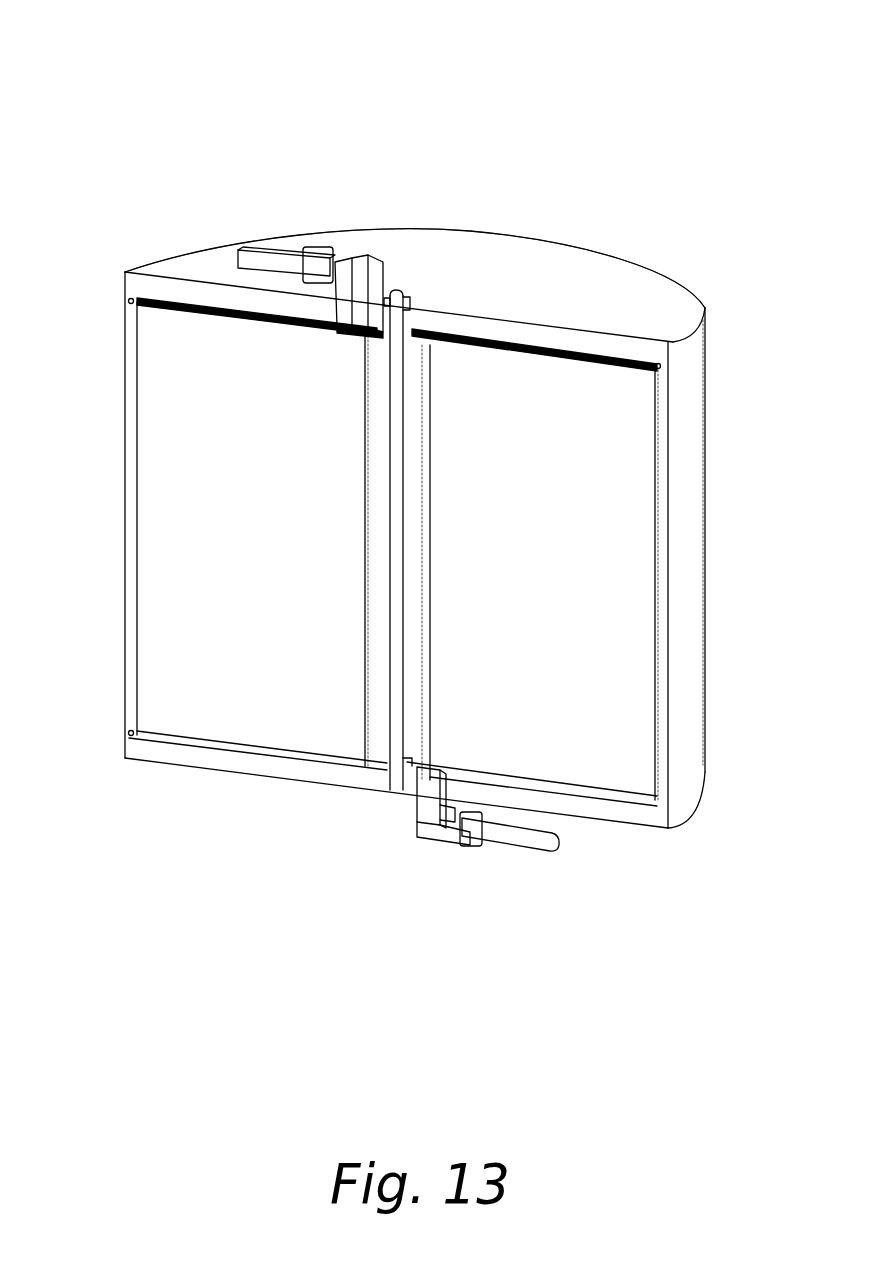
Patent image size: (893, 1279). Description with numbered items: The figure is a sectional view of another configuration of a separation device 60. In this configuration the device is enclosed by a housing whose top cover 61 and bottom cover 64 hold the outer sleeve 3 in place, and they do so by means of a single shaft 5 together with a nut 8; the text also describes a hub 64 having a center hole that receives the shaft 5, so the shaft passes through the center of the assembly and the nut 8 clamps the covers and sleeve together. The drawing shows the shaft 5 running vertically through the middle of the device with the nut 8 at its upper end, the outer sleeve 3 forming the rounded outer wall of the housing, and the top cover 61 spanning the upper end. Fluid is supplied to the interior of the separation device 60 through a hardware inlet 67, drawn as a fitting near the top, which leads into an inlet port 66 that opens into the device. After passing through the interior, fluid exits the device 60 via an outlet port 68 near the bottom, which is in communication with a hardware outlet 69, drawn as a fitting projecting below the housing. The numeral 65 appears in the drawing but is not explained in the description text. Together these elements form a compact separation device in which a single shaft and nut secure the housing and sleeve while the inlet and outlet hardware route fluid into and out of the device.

The outer sleeve 3 is at (683, 723).
The shaft 5 is at (412, 422).
The nut 8 is at (395, 377).
The separation device 60 is at (342, 148).
The top cover 61 is at (556, 312).
The bottom cover 64 is at (242, 762).
The right door frame 65 is at (437, 395).
The inlet port 66 is at (363, 316).
The hardware inlet 67 is at (312, 268).
The outlet port 68 is at (432, 788).
The hardware outlet 69 is at (462, 830).